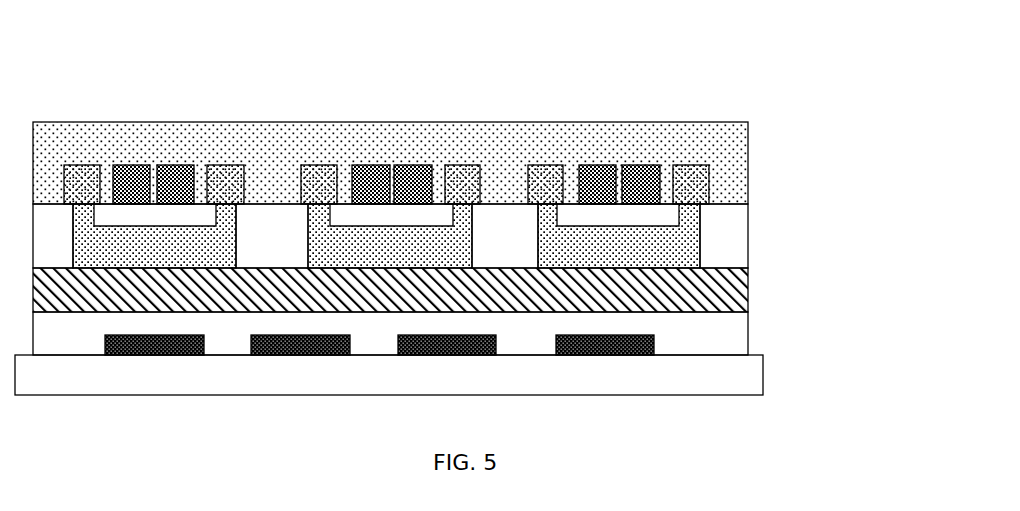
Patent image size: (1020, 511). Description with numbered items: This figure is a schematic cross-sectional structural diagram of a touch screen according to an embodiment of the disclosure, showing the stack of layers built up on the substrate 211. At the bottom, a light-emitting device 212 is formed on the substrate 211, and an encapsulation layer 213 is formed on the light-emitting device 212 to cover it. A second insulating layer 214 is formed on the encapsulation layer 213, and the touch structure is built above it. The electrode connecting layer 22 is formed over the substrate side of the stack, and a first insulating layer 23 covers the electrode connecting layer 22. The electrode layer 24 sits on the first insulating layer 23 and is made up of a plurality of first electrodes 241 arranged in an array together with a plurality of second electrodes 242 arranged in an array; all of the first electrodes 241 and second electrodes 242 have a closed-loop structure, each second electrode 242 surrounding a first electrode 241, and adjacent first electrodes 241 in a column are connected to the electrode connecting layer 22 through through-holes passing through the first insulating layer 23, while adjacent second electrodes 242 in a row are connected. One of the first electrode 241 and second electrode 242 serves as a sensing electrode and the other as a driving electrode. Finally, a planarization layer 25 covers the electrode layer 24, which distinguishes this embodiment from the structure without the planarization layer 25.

The electrode layer 24 is at (723, 80).
The first electrode 241 is at (73, 168).
The second electrode 242 is at (125, 165).
The planarization layer 25 is at (710, 166).
The first insulating layer 23 is at (712, 217).
The electrode connecting layer 22 is at (700, 250).
The second insulating layer 214 is at (748, 292).
The encapsulation layer 213 is at (724, 325).
The light-emitting device 212 is at (654, 348).
The substrate 211 is at (724, 375).